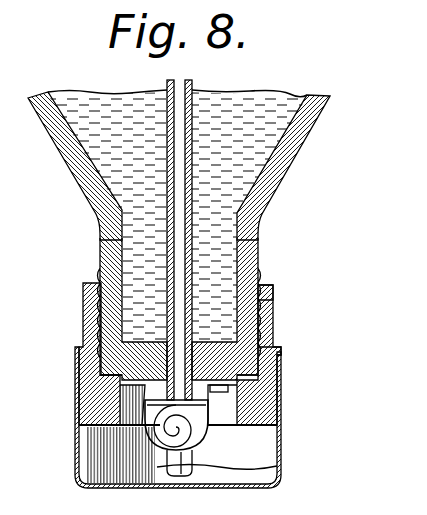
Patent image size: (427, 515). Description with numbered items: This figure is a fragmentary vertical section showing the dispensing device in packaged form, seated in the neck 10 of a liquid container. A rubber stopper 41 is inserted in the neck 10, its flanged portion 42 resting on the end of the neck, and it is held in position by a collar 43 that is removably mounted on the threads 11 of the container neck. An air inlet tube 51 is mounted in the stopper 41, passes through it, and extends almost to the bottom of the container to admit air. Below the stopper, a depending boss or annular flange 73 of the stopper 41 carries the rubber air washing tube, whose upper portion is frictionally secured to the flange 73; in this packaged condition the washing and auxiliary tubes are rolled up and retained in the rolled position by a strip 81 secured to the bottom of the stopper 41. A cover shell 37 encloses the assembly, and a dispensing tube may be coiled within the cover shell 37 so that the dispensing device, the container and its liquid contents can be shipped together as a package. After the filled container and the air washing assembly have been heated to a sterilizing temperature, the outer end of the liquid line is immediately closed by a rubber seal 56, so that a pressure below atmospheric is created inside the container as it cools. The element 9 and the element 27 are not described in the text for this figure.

The funnel cone wall 9 is at (300, 145).
The neck 10 is at (273, 243).
The air inlet tube 51 is at (167, 262).
The threads 11 is at (257, 298).
The collar 43 is at (330, 324).
The rubber stopper 41 is at (337, 356).
The flanged portion 42 is at (110, 371).
The annular flange 73 is at (205, 388).
The strip 81 is at (145, 427).
The stem 27 is at (153, 445).
The cover shell 37 is at (275, 438).
The rubber seal 56 is at (270, 467).